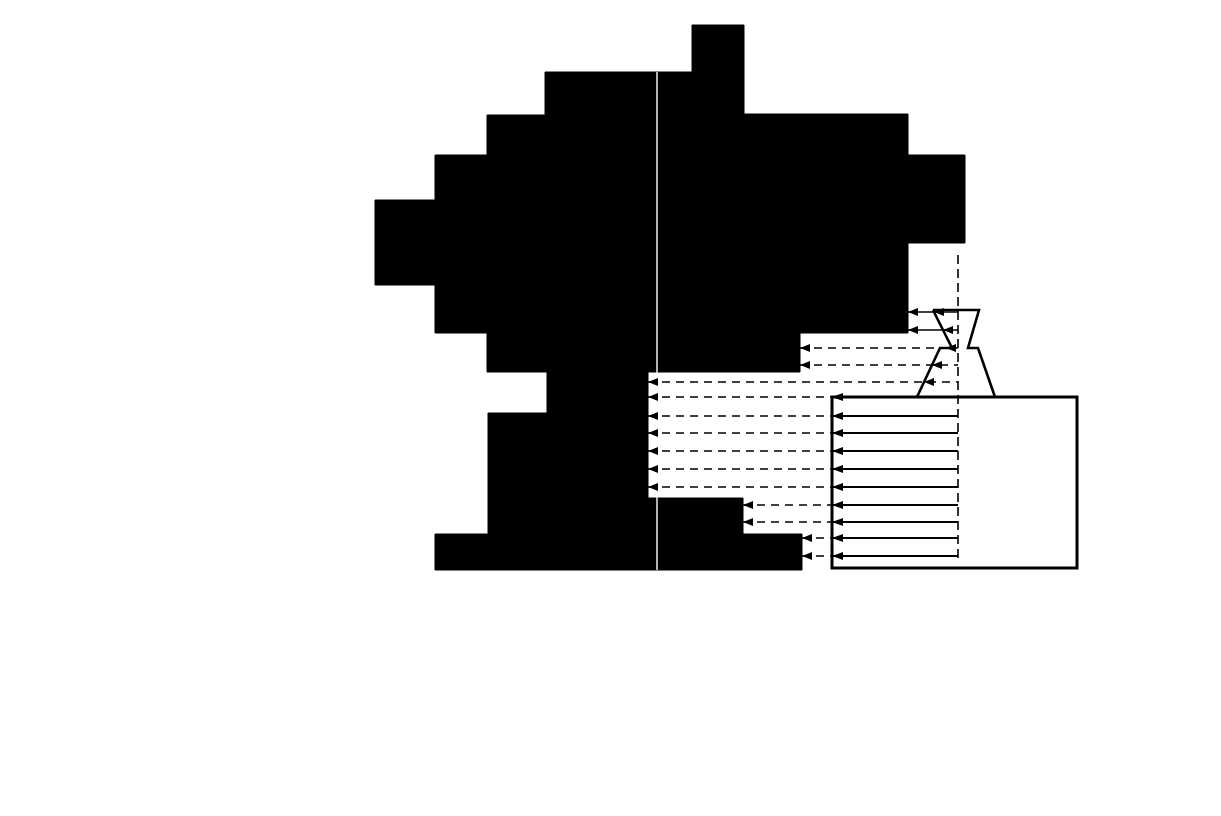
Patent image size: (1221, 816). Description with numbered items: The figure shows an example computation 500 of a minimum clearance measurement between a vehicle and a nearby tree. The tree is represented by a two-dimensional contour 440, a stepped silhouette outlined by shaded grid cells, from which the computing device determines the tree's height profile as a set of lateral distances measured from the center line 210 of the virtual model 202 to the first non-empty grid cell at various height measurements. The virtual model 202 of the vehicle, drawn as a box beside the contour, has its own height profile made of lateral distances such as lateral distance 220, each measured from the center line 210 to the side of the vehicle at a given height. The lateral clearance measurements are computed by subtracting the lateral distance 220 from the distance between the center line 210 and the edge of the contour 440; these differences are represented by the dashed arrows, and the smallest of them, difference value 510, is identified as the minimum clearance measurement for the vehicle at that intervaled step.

The computation 500 is at (173, 648).
The two-dimensional contour 440 is at (967, 185).
The center line 210 is at (960, 280).
The difference value 510 is at (952, 344).
The virtual model 202 is at (1078, 430).
The lateral distance 220 is at (912, 480).